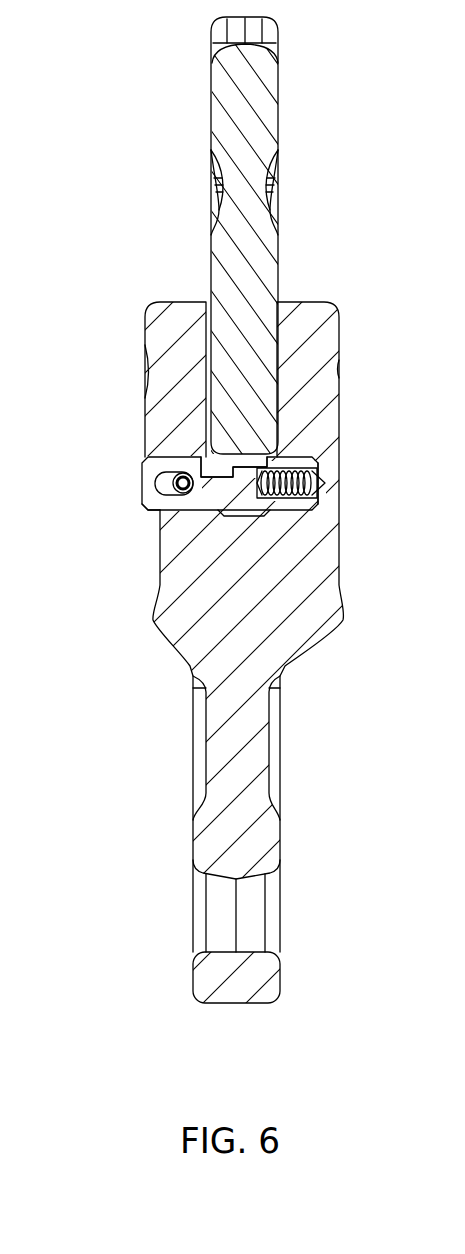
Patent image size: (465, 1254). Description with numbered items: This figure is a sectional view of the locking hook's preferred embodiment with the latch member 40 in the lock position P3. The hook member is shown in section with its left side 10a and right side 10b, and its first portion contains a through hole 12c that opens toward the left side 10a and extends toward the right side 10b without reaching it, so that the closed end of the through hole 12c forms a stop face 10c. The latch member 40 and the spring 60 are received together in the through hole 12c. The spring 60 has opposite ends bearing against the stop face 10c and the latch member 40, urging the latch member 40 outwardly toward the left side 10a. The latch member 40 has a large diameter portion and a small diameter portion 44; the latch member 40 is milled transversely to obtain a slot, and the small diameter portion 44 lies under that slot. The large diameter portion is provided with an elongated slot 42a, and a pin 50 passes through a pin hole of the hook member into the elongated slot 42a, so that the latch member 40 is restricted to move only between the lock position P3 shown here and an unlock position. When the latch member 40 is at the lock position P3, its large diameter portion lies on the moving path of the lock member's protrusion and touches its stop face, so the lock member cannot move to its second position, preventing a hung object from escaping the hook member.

The left side 10a is at (147, 347).
The right side 10b is at (339, 350).
The stop face 10c is at (325, 470).
The through hole 12c is at (313, 460).
The latch member 40 is at (133, 468).
The elongated slot 42a is at (153, 512).
The small diameter portion 44 is at (222, 478).
The pin 50 is at (170, 462).
The spring 60 is at (308, 510).
The lock position P3 is at (120, 499).